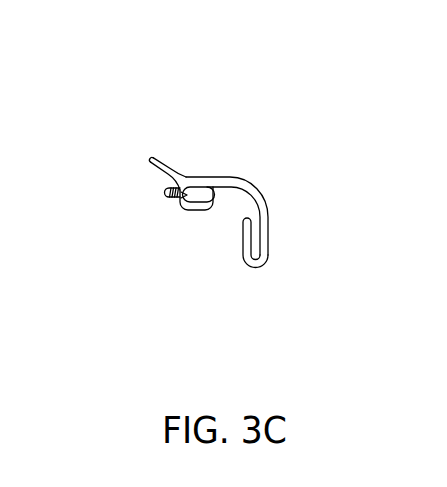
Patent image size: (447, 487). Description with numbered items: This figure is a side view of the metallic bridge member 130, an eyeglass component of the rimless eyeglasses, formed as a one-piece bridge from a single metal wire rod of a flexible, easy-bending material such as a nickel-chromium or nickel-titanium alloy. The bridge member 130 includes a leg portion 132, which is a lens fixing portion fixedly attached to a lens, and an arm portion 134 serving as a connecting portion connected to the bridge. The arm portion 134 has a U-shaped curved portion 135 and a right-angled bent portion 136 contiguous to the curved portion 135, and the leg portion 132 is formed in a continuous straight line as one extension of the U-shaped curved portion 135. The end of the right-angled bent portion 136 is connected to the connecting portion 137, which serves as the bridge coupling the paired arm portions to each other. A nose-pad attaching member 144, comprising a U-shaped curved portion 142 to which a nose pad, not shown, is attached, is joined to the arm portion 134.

The metallic bridge member 130 is at (197, 105).
The leg portion 132 is at (165, 189).
The arm portion 134 is at (179, 219).
The U-shaped curved portion 135 is at (213, 203).
The right-angled bent portion 136 is at (182, 203).
The connecting portion 137 is at (156, 158).
The U-shaped curved portion 142 is at (255, 266).
The nose-pad attaching member 144 is at (242, 162).